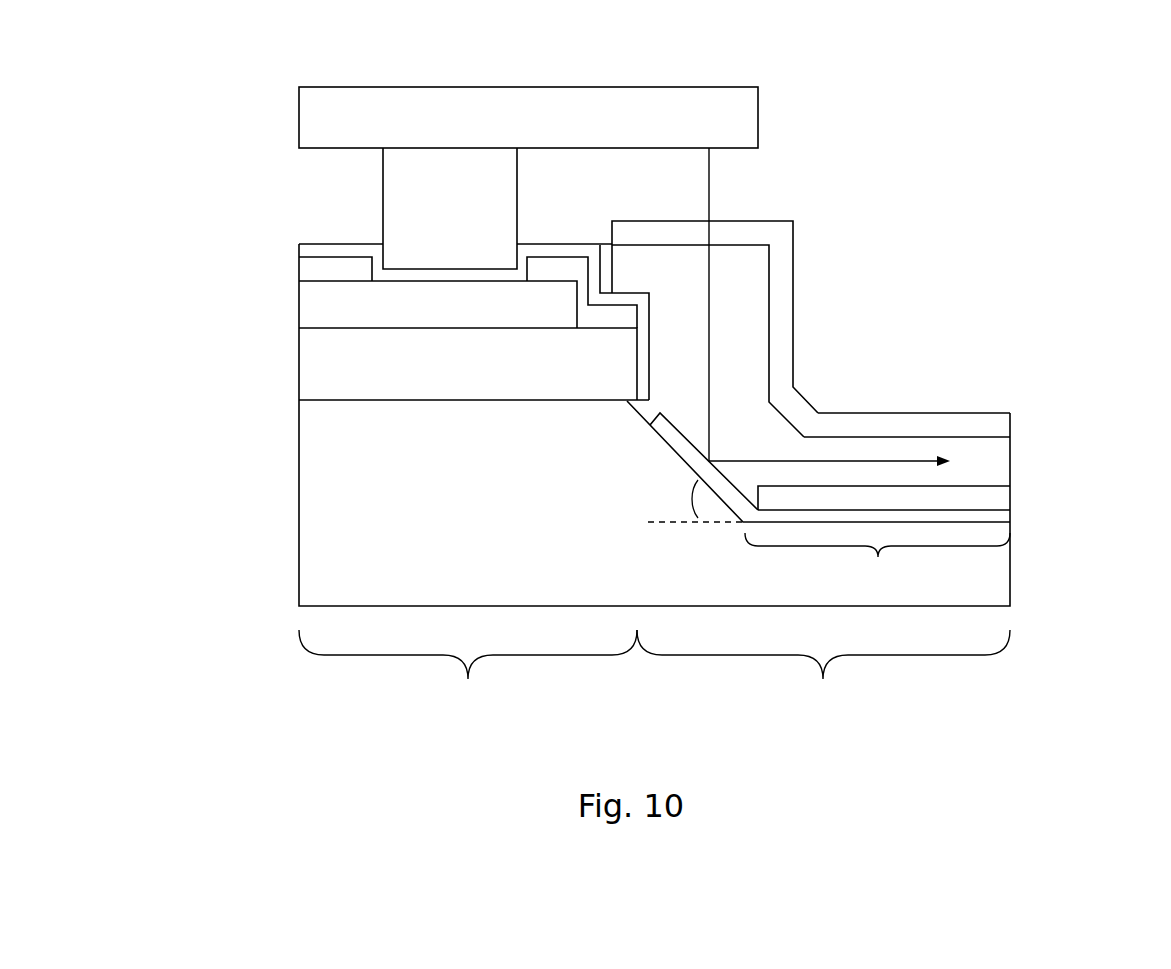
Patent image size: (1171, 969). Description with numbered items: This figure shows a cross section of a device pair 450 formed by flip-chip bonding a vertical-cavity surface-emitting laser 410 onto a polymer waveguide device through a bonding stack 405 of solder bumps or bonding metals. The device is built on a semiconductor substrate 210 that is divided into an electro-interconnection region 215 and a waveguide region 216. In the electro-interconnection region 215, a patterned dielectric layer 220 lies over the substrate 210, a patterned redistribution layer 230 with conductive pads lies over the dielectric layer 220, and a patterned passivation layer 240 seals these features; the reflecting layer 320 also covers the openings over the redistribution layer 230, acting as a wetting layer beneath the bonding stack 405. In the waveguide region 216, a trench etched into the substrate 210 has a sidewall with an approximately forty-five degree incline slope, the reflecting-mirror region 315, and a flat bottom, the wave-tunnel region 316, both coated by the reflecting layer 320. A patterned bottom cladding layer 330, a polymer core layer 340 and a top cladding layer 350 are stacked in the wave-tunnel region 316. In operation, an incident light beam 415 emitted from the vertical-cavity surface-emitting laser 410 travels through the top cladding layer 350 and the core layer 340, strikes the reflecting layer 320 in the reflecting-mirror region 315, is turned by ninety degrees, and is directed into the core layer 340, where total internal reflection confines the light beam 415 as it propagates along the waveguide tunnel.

The semiconductor substrate 210 is at (654, 503).
The electro-interconnection region 215 is at (468, 669).
The waveguide region 216 is at (823, 669).
The patterned dielectric layer 220 is at (474, 364).
The patterned redistribution layer 230 is at (438, 304).
The patterned passivation layer 240 is at (310, 273).
The reflecting-mirror region 315 is at (668, 450).
The wave-tunnel region 316 is at (877, 562).
The reflecting layer 320 is at (322, 251).
The patterned bottom cladding layer 330 is at (998, 495).
The core layer 340 is at (998, 458).
The top cladding layer 350 is at (985, 423).
The bonding stack 405 is at (450, 208).
The vertical-cavity surface-emitting laser 410 is at (528, 117).
The incident light beam 415 is at (714, 366).
The device pair 450 is at (1010, 112).